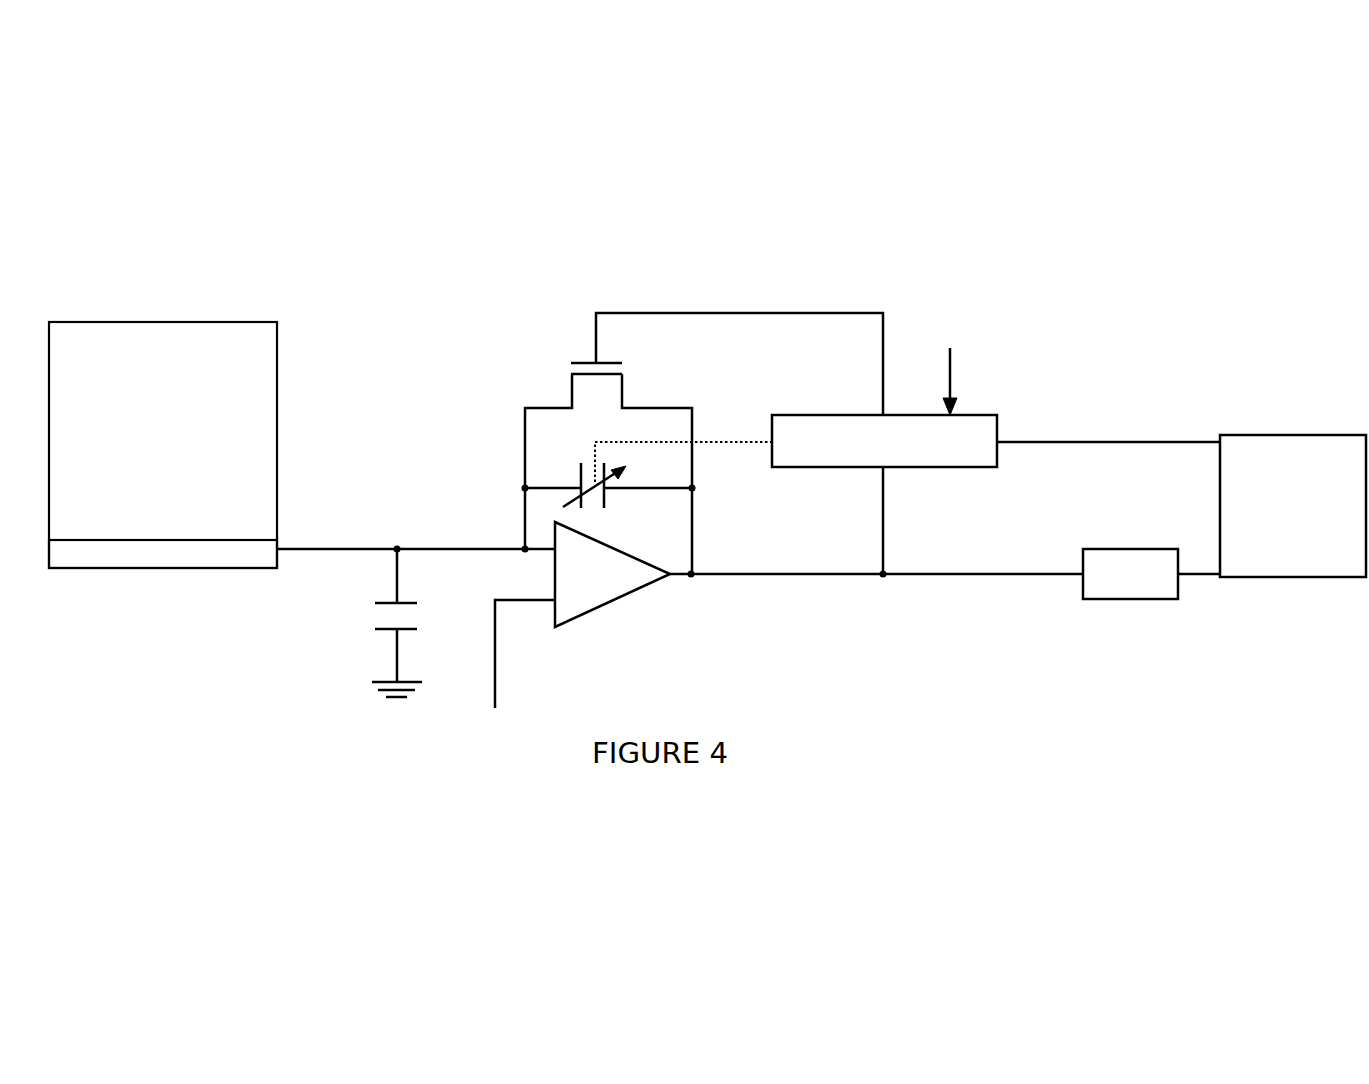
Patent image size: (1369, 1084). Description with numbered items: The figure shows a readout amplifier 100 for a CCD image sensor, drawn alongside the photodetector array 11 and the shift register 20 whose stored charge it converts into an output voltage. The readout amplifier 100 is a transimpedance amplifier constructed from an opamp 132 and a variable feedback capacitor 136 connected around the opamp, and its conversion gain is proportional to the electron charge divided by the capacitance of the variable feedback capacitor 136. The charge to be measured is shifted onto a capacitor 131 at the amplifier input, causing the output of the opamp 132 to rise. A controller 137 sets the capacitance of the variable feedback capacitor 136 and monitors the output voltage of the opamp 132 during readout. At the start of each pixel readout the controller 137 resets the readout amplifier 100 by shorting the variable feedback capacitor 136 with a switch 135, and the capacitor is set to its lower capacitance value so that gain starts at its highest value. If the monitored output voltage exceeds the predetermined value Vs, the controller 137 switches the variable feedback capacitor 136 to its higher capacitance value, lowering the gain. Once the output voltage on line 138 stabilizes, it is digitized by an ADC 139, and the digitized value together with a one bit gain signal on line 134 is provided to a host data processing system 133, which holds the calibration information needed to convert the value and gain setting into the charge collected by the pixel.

The photodetector array 11 is at (95, 325).
The shift register 20 is at (112, 562).
The readout amplifier 100 is at (403, 333).
The capacitor 131 is at (417, 629).
The opamp 132 is at (613, 602).
The host data processing system 133 is at (1287, 560).
The line 134 is at (1062, 442).
The switch 135 is at (570, 374).
The variable feedback capacitor 136 is at (580, 470).
The controller 137 is at (803, 467).
The line 138 is at (1000, 574).
The ADC 139 is at (1123, 599).